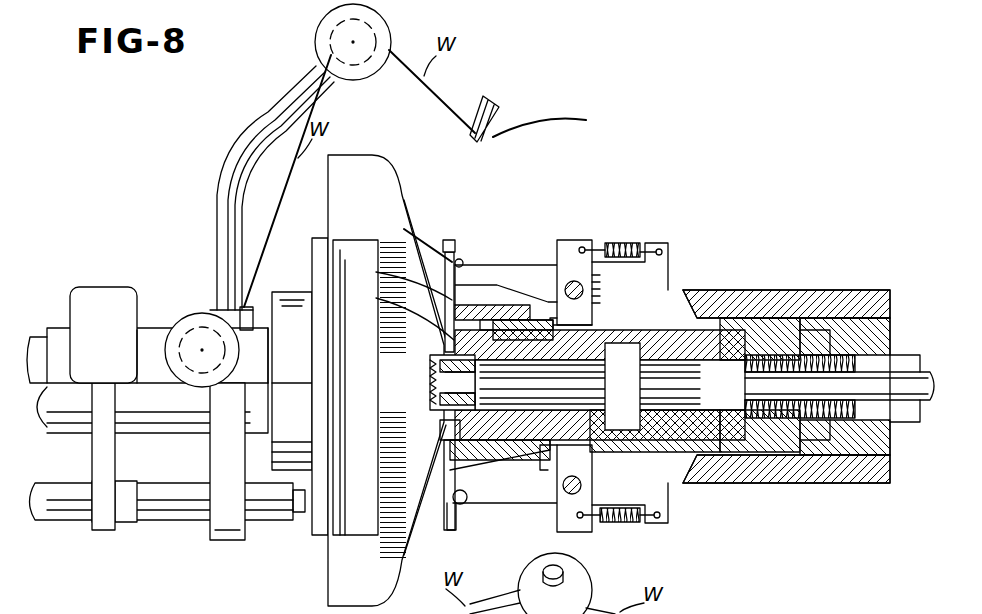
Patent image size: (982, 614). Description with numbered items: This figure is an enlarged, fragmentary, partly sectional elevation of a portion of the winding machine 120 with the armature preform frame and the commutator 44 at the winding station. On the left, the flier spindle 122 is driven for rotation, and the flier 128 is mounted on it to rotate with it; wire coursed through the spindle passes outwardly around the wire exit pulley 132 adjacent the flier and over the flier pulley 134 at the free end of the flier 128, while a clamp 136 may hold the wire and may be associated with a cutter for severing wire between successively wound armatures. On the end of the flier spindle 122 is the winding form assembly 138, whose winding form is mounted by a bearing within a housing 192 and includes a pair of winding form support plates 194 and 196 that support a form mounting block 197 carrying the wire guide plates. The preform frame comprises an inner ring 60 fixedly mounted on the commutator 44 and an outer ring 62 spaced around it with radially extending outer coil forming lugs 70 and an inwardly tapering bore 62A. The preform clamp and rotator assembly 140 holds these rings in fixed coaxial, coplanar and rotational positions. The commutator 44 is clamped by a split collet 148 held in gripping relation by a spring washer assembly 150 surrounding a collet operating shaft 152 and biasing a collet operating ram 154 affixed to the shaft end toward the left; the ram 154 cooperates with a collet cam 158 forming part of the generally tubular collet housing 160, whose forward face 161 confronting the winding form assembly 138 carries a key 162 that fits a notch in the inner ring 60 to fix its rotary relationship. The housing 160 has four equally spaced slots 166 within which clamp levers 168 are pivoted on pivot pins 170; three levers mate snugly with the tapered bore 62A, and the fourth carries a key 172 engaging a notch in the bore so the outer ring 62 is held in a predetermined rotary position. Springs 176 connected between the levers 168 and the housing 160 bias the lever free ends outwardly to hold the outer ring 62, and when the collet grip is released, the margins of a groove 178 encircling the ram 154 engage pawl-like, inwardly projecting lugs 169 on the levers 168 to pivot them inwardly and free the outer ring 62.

The winding machine 120 is at (56, 278).
The flier spindle 122 is at (152, 330).
The flier 128 is at (284, 98).
The wire exit pulley 132 is at (196, 316).
The flier pulley 134 is at (382, 29).
The clamp 136 is at (490, 104).
The winding form assembly 138 is at (303, 534).
The preform clamp and rotator assembly 140 is at (589, 203).
The commutator 44 is at (430, 381).
The inner ring 60 is at (438, 442).
The outer ring 62 is at (415, 238).
The bore 62A is at (461, 522).
The outer coil forming lugs 70 is at (450, 251).
The split collet 148 is at (595, 358).
The spring washer assembly 150 is at (781, 416).
The collet operating shaft 152 is at (911, 376).
The collet operating ram 154 is at (735, 456).
The collet cam 158 is at (463, 495).
The collet housing 160 is at (766, 290).
The forward face 161 is at (397, 280).
The key 162 is at (398, 313).
The slots 166 is at (680, 298).
The clamp levers 168 is at (528, 266).
The lugs 169 is at (596, 304).
The pivot pins 170 is at (567, 282).
The key 172 is at (462, 260).
The springs 176 is at (621, 243).
The groove 178 is at (578, 440).
The housing 192 is at (289, 292).
The winding form support plate 194 is at (318, 546).
The winding form support plate 196 is at (322, 248).
The form mounting block 197 is at (352, 525).